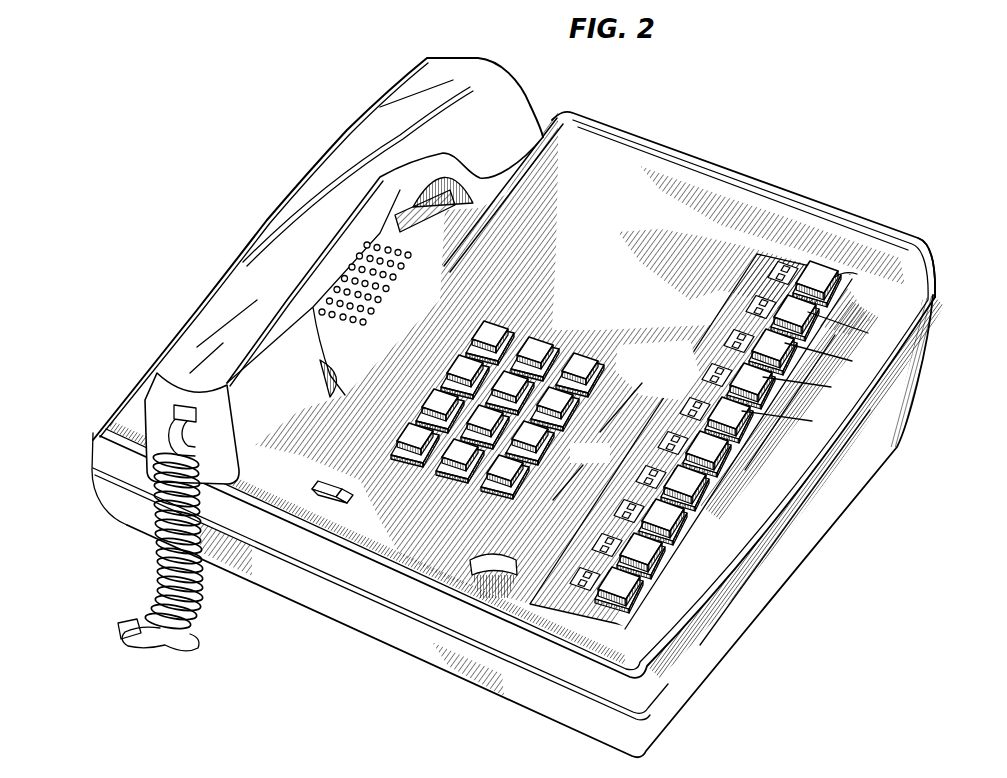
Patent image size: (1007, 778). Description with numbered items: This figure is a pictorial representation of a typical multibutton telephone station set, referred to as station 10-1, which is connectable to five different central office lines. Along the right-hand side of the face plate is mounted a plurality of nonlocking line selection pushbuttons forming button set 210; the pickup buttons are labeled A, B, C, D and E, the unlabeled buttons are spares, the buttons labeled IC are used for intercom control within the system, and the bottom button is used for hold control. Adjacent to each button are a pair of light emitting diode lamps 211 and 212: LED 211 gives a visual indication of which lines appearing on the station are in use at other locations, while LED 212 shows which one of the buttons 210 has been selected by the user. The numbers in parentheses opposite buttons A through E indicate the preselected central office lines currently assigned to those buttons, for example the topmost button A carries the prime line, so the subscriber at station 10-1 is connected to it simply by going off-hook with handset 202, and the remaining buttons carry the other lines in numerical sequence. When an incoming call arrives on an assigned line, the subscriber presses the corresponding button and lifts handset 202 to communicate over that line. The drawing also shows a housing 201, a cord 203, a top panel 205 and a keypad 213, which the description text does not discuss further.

The housing base 201 is at (812, 546).
The handset 202 is at (288, 203).
The handset cord 203 is at (173, 647).
The top panel 205 is at (630, 158).
The button set 210 is at (722, 446).
The LED lamp 211 is at (690, 398).
The LED lamp 212 is at (777, 259).
The dial keypad 213 is at (500, 410).
The station 10-1 is at (925, 273).